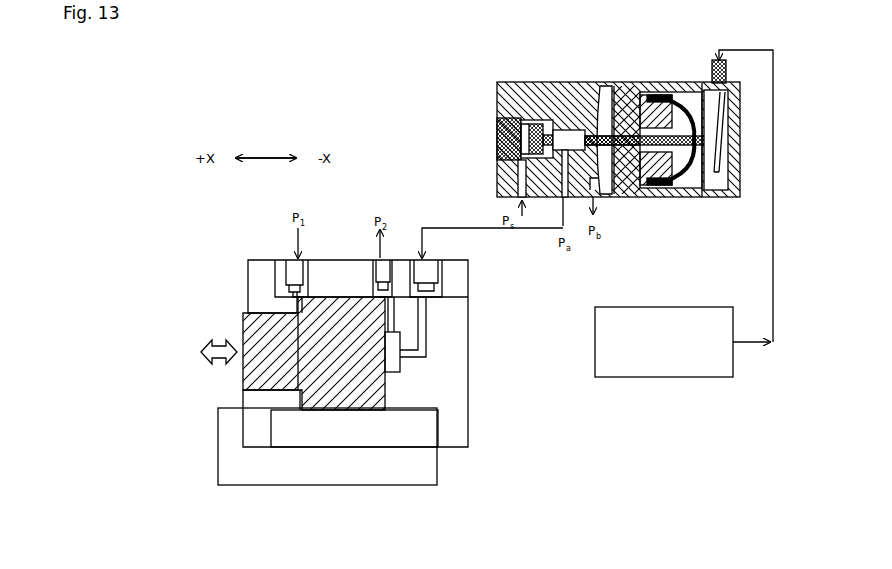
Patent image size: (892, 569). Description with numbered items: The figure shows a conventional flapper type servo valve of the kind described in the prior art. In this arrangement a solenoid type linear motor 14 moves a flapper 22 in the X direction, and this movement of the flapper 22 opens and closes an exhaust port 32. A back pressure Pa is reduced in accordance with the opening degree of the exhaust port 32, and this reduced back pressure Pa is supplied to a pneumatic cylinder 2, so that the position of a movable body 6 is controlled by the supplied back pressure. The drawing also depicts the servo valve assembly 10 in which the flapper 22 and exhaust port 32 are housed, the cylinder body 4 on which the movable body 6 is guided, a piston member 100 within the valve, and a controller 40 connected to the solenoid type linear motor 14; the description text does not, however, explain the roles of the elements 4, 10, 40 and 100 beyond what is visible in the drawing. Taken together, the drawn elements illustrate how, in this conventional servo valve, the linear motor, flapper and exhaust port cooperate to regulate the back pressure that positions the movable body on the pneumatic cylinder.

The pneumatic cylinder 2 is at (456, 474).
The cylinder body 4 is at (260, 290).
The movable body 6 is at (248, 338).
The valve unit 10 is at (585, 118).
The solenoid type linear motor 14 is at (660, 86).
The flapper 22 is at (610, 110).
The exhaust port 32 is at (587, 130).
The controller 40 is at (670, 377).
The piston 100 is at (536, 127).